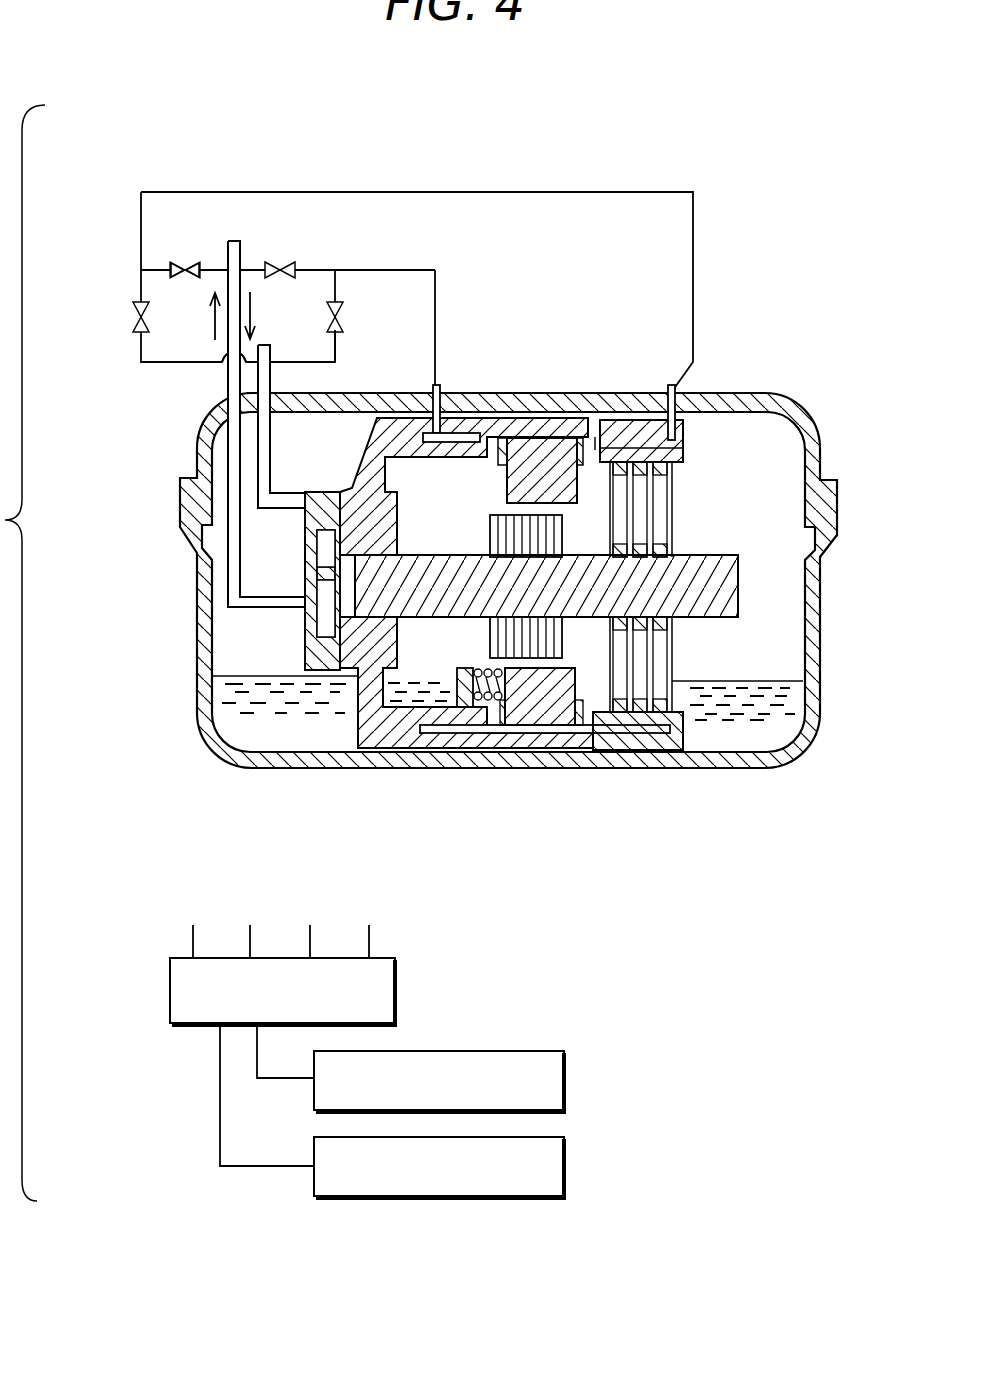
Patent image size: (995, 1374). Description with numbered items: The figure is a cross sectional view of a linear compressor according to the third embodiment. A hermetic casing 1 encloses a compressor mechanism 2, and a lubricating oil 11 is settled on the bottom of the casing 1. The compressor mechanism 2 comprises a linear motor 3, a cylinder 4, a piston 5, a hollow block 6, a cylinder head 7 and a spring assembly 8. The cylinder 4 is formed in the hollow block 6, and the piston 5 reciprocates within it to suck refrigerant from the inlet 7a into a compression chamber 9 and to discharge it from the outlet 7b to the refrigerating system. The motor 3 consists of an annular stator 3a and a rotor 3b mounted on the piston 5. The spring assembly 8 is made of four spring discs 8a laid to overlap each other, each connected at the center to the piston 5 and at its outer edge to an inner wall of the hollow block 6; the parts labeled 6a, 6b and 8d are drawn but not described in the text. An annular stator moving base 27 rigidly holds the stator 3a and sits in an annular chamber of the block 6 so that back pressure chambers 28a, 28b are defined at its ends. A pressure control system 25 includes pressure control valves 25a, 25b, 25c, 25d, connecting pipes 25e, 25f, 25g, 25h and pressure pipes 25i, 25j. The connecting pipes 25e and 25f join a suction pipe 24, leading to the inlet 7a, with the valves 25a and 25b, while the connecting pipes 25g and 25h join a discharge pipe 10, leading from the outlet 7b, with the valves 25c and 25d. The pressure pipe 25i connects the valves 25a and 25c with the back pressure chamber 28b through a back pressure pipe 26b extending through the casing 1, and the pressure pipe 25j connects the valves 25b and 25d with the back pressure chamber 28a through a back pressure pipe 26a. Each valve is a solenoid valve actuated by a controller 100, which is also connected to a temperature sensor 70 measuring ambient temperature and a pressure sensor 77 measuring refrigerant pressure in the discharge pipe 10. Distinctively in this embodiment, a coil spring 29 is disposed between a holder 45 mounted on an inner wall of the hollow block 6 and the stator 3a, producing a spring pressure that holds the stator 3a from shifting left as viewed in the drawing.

The hermetic casing 1 is at (768, 770).
The compressor mechanism 2 is at (365, 455).
The linear motor 3 is at (515, 428).
The annular stator 3a is at (558, 428).
The rotor 3b is at (560, 740).
The cylinder 4 is at (360, 693).
The piston 5 is at (396, 752).
The hollow block 6 is at (660, 440).
The terminal plate 6a is at (480, 445).
The lead wire 6b is at (595, 450).
The cylinder head 7 is at (303, 657).
The inlet 7a is at (320, 545).
The outlet 7b is at (320, 625).
The spring assembly 8 is at (645, 460).
The spring discs 8a is at (673, 688).
The rotor end plate 8d is at (625, 445).
The compression chamber 9 is at (330, 583).
The discharge pipe 10 is at (234, 240).
The lubricating oil 11 is at (290, 738).
The suction pipe 24 is at (268, 345).
The pressure control system 25 is at (160, 364).
The pressure control valve 25a is at (133, 312).
The pressure control valve 25b is at (343, 322).
The pressure control valve 25c is at (185, 262).
The pressure control valve 25d is at (285, 262).
The connecting pipe 25e is at (190, 365).
The connecting pipe 25f is at (336, 352).
The connecting pipe 25g is at (213, 268).
The connecting pipe 25h is at (245, 268).
The pressure pipe 25i is at (415, 192).
The pressure pipe 25j is at (400, 270).
The back pressure pipe 26a is at (440, 385).
The back pressure pipe 26b is at (675, 390).
The stator moving base 27 is at (590, 470).
The back pressure chamber 28a is at (462, 733).
The back pressure chamber 28b is at (673, 770).
The coil spring 29 is at (480, 707).
The holder 45 is at (440, 712).
The temperature sensor 70 is at (566, 1083).
The pressure sensor 77 is at (566, 1168).
The controller 100 is at (397, 990).